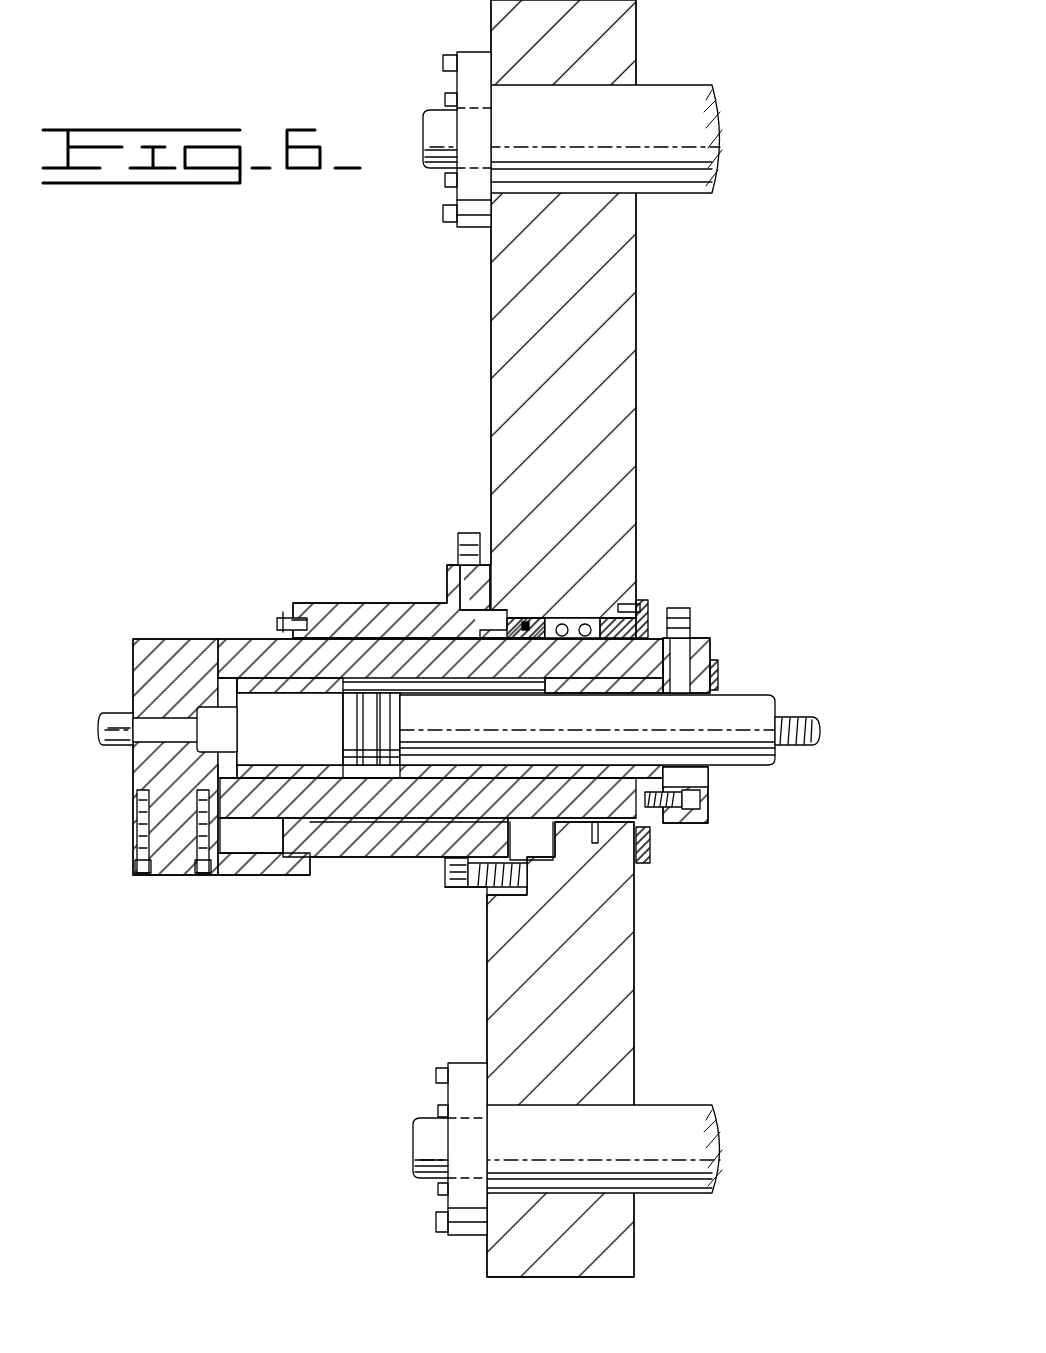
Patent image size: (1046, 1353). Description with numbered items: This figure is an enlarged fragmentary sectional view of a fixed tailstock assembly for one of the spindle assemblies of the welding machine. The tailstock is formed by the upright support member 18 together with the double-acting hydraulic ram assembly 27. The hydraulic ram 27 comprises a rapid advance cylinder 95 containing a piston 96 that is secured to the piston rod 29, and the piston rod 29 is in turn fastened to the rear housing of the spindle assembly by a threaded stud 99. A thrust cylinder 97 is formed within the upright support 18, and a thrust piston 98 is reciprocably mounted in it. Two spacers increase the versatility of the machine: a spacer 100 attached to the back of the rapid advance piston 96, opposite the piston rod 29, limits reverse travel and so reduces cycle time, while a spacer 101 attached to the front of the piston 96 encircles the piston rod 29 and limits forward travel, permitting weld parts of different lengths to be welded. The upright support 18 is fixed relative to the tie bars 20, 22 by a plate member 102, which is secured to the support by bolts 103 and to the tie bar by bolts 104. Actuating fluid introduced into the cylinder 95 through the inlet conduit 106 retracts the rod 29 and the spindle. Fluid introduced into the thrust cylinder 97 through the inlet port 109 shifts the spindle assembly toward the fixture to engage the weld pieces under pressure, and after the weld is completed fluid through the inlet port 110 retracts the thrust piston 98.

The support member 18 is at (626, 37).
The tie bar 20 is at (666, 95).
The tie bar 22 is at (660, 1112).
The double-acting hydraulic ram assembly 27 is at (464, 708).
The piston rod 29 is at (753, 770).
The rapid advance cylinder 95 is at (430, 790).
The piston 96 is at (350, 718).
The thrust cylinder 97 is at (565, 620).
The piston 98 is at (545, 615).
The threaded stud 99 is at (790, 718).
The spacer 100 is at (296, 690).
The spacer 101 is at (592, 693).
The plate member 102 is at (476, 58).
The bolt 103 is at (444, 68).
The bolt 104 is at (449, 179).
The inlet conduit 106 is at (692, 628).
The inlet port 109 is at (457, 540).
The inlet port 110 is at (585, 645).